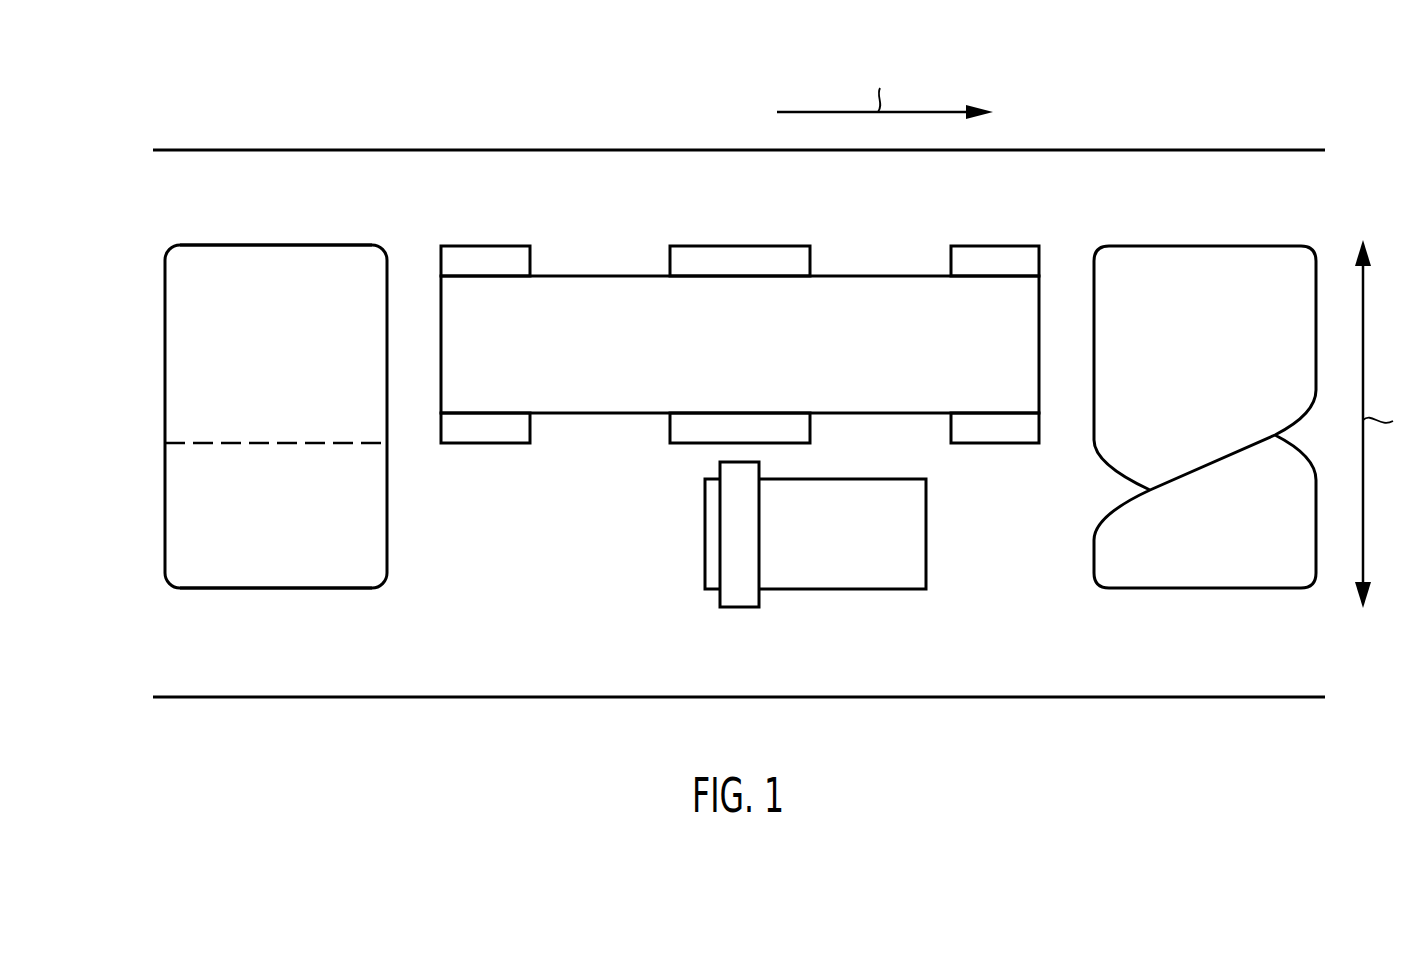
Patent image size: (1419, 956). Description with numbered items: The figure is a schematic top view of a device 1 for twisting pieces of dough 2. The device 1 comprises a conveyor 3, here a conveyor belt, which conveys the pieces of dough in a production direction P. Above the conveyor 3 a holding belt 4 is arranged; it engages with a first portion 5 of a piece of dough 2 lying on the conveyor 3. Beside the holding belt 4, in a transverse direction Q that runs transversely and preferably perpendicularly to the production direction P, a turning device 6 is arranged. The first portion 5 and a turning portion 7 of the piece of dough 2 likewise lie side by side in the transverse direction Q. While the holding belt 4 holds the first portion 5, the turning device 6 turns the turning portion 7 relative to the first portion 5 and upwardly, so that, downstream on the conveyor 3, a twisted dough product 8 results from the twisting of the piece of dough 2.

The device 1 is at (306, 93).
The piece of dough 2 is at (235, 419).
The conveyor 3 is at (426, 687).
The holding belt 4 is at (830, 240).
The first portion 5 is at (329, 258).
The turning device 6 is at (699, 608).
The turning portion 7 is at (280, 582).
The twisted dough product 8 is at (1194, 228).